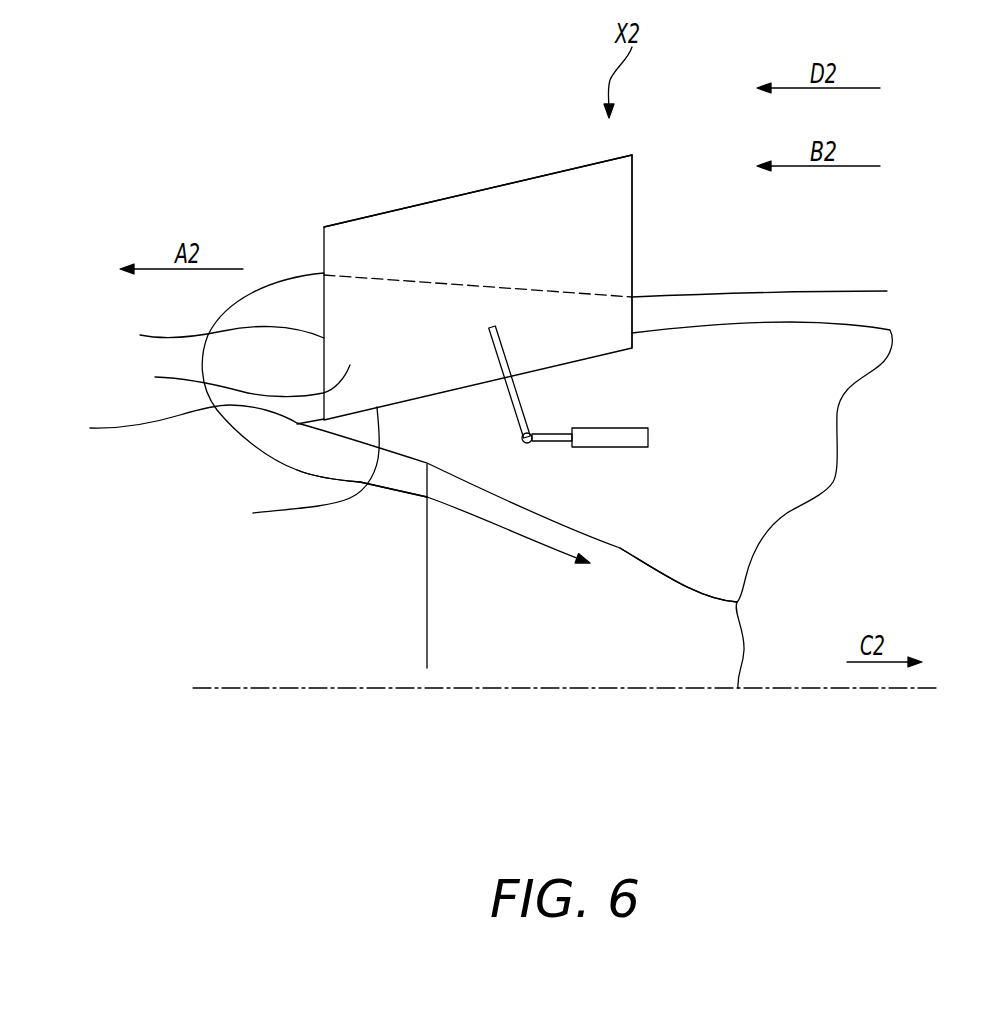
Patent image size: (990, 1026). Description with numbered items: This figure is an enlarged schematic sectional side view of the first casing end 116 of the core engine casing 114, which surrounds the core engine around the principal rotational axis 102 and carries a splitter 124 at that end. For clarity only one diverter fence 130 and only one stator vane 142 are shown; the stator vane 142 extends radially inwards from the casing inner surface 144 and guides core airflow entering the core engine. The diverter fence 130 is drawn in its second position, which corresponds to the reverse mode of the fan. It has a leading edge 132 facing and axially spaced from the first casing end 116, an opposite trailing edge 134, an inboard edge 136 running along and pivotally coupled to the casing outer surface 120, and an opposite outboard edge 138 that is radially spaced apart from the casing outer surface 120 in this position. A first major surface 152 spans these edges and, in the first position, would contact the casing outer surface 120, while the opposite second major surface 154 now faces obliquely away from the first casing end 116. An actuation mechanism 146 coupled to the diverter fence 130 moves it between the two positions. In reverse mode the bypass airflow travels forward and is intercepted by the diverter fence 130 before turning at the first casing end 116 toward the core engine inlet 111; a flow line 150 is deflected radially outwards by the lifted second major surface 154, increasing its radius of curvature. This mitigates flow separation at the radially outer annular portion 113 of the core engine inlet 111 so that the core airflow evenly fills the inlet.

The principal rotational axis 102 is at (810, 688).
The core engine inlet 111 is at (315, 578).
The radially outer annular portion 113 is at (403, 512).
The core engine casing 114 is at (335, 88).
The first casing end 116 is at (297, 452).
The casing outer surface 120 is at (860, 326).
The splitter 124 is at (393, 503).
The diverter fence 130 is at (553, 146).
The leading edge 132 is at (265, 385).
The trailing edge 134 is at (632, 195).
The inboard edge 136 is at (295, 468).
The outboard edge 138 is at (517, 181).
The stator vane 142 is at (443, 628).
The casing inner surface 144 is at (677, 583).
The actuation mechanism 146 is at (627, 458).
The flow line 150 is at (842, 289).
The first major surface 152 is at (227, 381).
The second major surface 154 is at (395, 245).